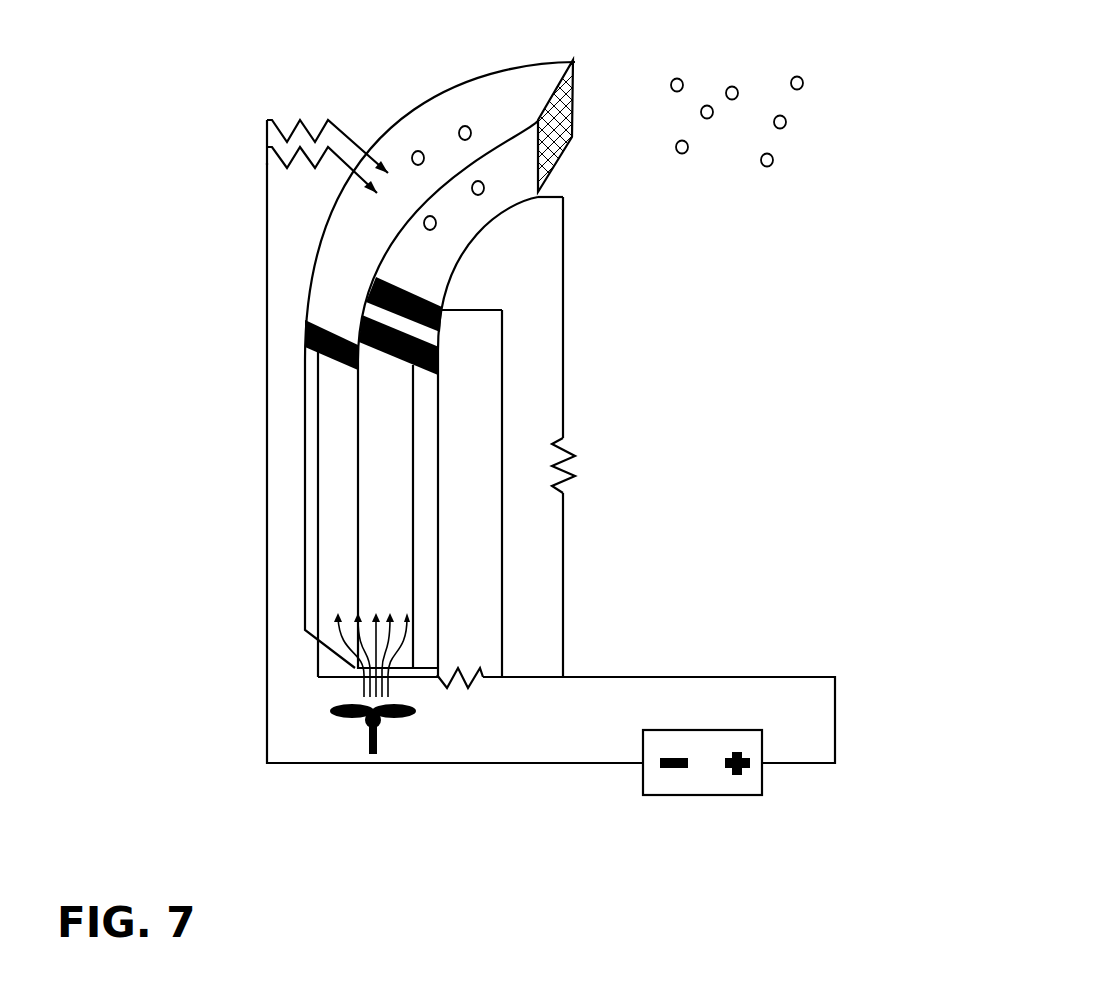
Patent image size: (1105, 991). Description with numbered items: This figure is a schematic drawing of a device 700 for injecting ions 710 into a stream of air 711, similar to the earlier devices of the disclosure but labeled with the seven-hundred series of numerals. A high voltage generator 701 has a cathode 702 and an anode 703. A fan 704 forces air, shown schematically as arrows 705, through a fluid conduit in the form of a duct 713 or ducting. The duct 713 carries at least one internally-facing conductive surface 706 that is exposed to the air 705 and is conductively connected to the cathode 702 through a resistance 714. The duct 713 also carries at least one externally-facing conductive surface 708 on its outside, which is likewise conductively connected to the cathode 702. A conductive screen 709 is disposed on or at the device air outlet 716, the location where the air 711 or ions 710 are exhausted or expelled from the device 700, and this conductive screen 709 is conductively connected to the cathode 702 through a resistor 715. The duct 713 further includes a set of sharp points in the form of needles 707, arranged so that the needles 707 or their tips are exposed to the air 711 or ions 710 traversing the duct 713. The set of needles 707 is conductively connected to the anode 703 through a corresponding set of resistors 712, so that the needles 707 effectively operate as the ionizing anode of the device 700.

The device 700 is at (787, 377).
The high voltage generator 701 is at (703, 805).
The cathode 702 is at (833, 817).
The anode 703 is at (577, 810).
The fan 704 is at (397, 723).
The air 705 is at (367, 612).
The internally-facing conductive surface 706 is at (358, 317).
The needles 707 is at (340, 138).
The externally-facing conductive surface 708 is at (422, 287).
The conductive screen 709 is at (588, 108).
The ions 710 is at (440, 120).
The air 711 is at (827, 117).
The set of resistors 712 is at (266, 120).
The duct 713 is at (297, 523).
The resistance 714 is at (457, 683).
The resistor 715 is at (580, 458).
The device air outlet 716 is at (522, 88).